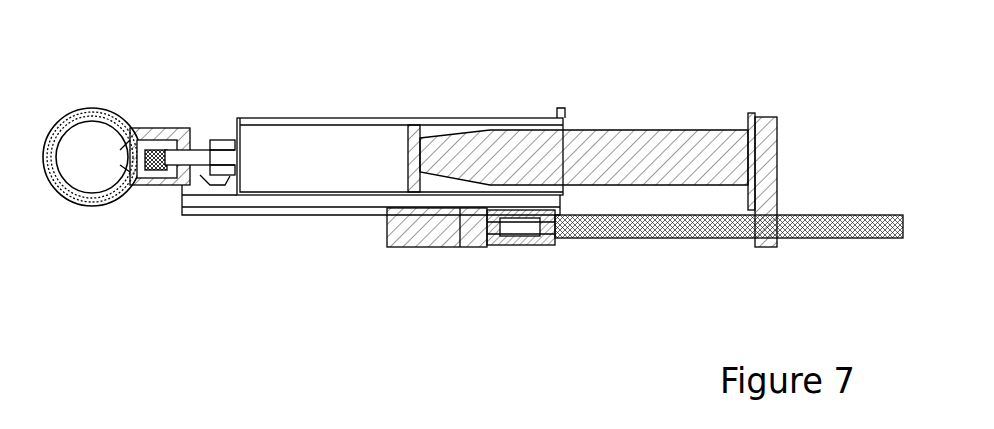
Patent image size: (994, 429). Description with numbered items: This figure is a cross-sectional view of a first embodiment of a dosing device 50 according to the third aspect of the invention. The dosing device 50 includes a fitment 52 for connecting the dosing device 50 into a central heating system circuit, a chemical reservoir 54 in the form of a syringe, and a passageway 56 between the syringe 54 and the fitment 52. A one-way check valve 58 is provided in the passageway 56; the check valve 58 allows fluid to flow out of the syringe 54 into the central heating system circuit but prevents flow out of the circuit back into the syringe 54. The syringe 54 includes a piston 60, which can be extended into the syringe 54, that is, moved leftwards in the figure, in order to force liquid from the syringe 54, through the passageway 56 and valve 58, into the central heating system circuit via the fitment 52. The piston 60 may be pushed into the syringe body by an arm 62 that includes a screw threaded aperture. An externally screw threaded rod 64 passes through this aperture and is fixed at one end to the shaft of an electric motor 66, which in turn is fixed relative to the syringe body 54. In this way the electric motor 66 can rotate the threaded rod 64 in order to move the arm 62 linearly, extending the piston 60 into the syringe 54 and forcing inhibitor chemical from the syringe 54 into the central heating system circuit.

The dosing device 50 is at (691, 99).
The fitment 52 is at (88, 111).
The chemical reservoir 54 is at (298, 157).
The passageway 56 is at (193, 151).
The one-way check valve 58 is at (168, 161).
The piston 60 is at (508, 143).
The arm 62 is at (763, 169).
The externally screw threaded rod 64 is at (645, 235).
The electric motor 66 is at (432, 236).